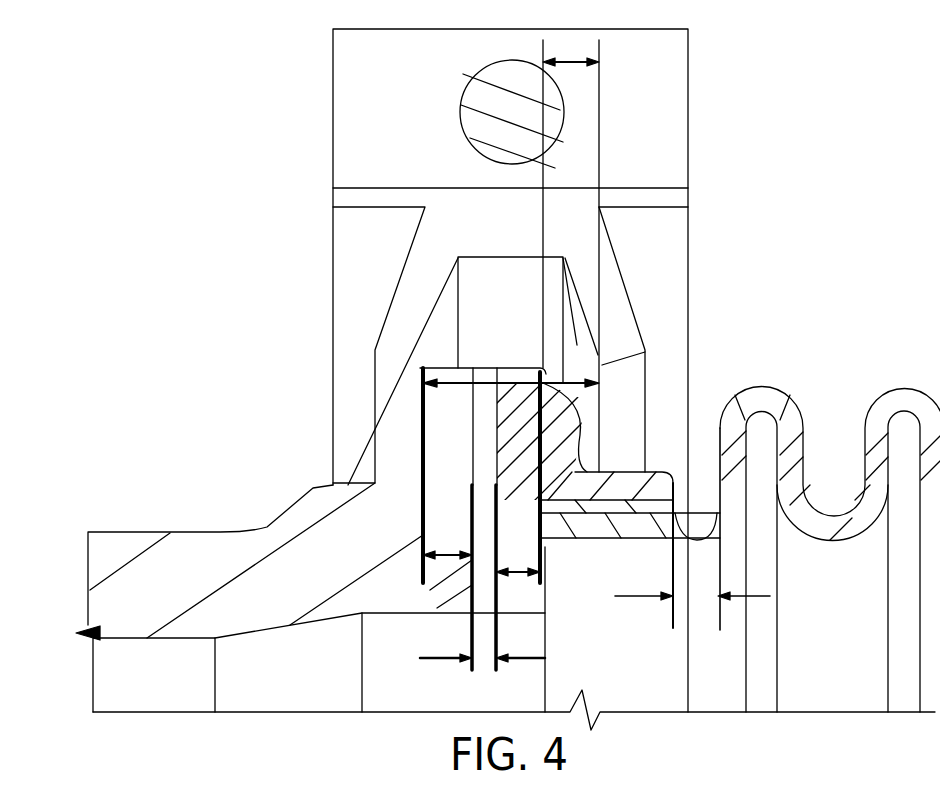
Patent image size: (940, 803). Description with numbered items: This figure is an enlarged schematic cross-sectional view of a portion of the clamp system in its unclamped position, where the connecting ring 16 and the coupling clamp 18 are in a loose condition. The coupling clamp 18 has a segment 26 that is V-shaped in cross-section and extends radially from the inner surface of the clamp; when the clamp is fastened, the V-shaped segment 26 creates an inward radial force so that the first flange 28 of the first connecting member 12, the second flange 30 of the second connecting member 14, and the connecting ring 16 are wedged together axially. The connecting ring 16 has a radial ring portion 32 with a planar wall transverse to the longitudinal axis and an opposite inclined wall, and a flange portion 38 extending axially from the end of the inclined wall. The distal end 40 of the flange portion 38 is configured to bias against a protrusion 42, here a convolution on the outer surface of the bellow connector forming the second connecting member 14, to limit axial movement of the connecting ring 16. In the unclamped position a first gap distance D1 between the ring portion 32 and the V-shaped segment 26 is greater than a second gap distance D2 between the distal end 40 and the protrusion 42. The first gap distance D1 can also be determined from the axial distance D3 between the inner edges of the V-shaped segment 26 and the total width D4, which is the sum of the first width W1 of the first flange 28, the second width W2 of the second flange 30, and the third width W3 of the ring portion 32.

The first connecting member 12 is at (218, 530).
The second connecting member 14 is at (827, 512).
The connecting ring 16 is at (605, 492).
The coupling clamp 18 is at (332, 115).
The V-shaped segment 26 is at (613, 337).
The first flange 28 is at (447, 368).
The second flange 30 is at (480, 365).
The radial ring portion 32 is at (550, 415).
The flange portion 38 is at (645, 492).
The distal end 40 is at (672, 477).
The protrusion 42 is at (762, 388).
The first gap distance D1 is at (569, 55).
The second gap distance D2 is at (705, 600).
The axial distance D3 is at (453, 388).
The total width D4 is at (447, 540).
The first width W1 is at (448, 558).
The second width W2 is at (490, 658).
The third width W3 is at (523, 577).